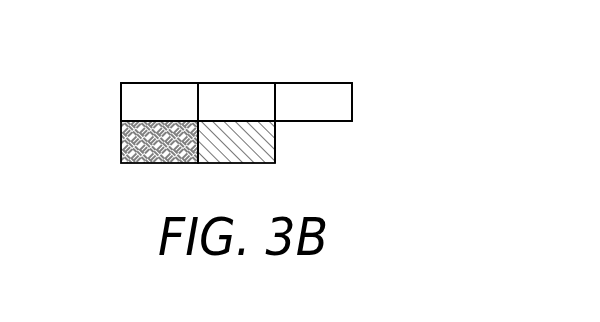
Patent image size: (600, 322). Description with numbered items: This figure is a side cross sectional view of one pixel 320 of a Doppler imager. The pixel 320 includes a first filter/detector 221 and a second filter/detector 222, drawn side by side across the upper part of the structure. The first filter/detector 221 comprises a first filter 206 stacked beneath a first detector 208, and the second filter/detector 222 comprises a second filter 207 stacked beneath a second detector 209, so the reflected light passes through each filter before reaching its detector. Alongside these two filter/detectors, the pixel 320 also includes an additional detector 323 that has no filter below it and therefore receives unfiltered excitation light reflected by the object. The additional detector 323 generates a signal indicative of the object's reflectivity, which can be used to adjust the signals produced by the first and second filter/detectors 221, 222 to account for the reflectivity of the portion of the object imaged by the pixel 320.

The pixel 320 is at (330, 53).
The first detector 208 is at (137, 107).
The first filter 206 is at (137, 145).
The second filter 207 is at (252, 150).
The second detector 209 is at (215, 87).
The first filter/detector 221 is at (145, 68).
The second filter/detector 222 is at (252, 68).
The additional detector 323 is at (322, 112).